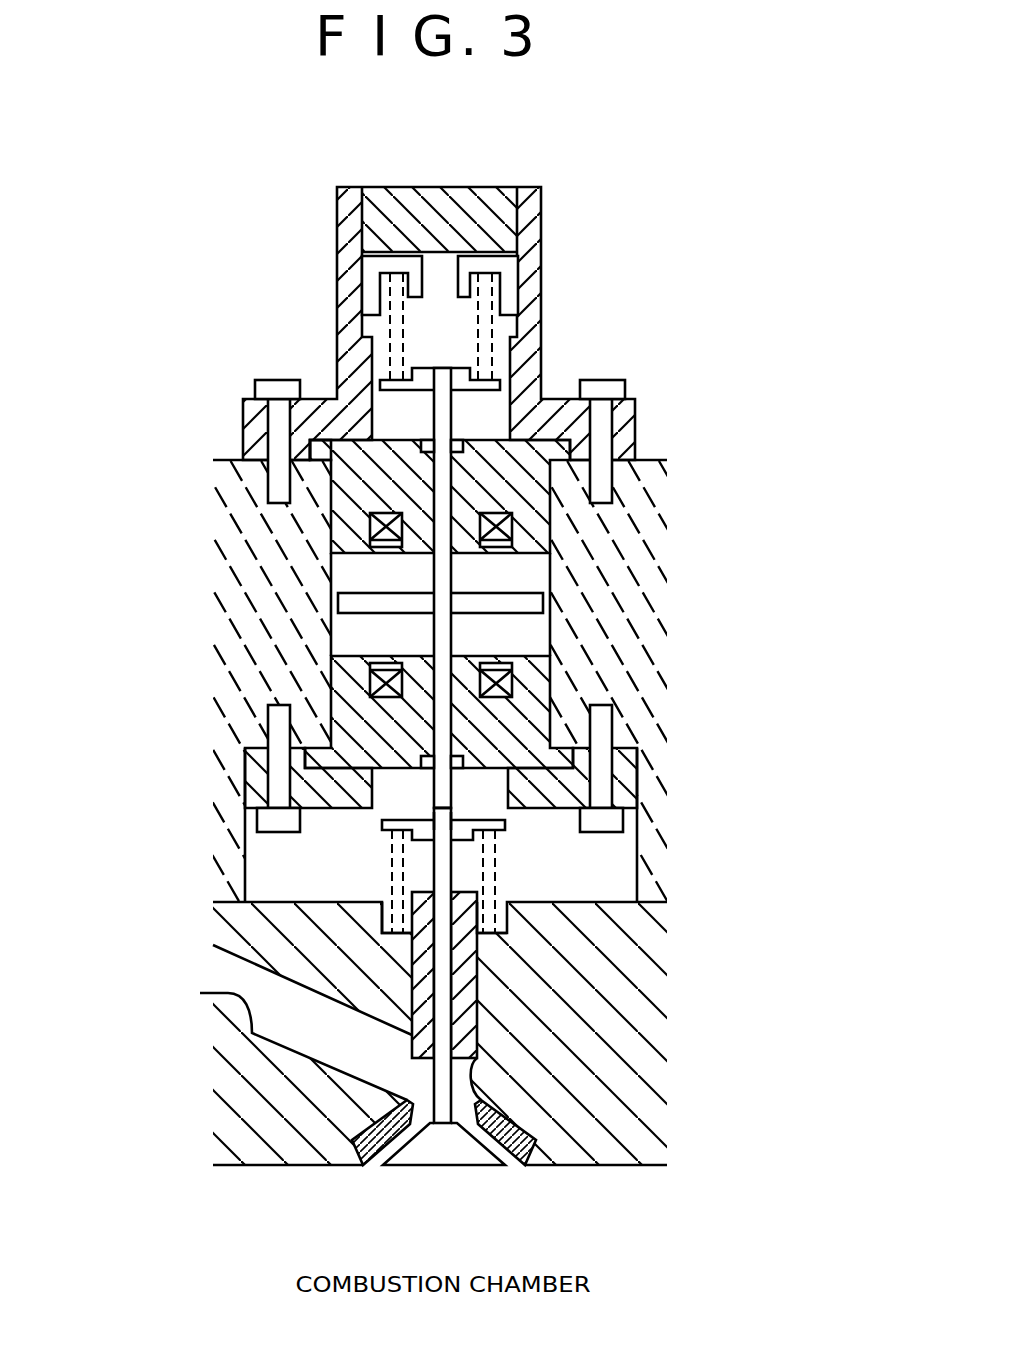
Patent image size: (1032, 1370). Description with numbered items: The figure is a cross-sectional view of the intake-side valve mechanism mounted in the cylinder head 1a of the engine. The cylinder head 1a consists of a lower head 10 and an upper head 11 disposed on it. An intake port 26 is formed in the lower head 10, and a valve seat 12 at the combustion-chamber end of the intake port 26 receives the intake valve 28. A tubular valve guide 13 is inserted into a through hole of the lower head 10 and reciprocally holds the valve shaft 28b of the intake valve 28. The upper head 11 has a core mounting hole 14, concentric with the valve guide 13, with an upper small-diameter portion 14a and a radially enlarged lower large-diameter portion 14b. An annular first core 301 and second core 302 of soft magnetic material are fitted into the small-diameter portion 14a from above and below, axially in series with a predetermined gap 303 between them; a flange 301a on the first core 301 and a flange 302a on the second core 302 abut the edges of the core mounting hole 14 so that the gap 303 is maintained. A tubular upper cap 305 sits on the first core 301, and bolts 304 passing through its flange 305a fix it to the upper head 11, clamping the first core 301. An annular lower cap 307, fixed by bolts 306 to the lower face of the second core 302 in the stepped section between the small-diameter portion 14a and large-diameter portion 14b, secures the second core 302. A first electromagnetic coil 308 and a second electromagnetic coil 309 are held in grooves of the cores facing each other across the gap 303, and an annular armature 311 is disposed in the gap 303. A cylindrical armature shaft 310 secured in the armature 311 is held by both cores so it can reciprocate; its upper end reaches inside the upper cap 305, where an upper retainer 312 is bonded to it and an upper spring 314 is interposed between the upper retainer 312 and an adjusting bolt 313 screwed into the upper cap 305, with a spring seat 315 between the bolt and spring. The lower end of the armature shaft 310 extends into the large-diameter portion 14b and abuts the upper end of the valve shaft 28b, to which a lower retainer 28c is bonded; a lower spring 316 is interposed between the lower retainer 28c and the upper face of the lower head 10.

The cylinder head 1a is at (456, 812).
The lower head 10 is at (645, 975).
The upper head 11 is at (658, 905).
The valve seat 12 is at (378, 1152).
The valve guide 13 is at (480, 1020).
The core mounting hole 14 is at (452, 584).
The small-diameter portion 14a is at (449, 500).
The large-diameter portion 14b is at (492, 744).
The intake port 26 is at (262, 1035).
The intake valve 28 is at (594, 1025).
The valve shaft 28b is at (445, 1088).
The lower retainer 28c is at (508, 830).
The first core 301 is at (500, 437).
The flange 301a is at (318, 441).
The second core 302 is at (540, 705).
The flange 302a is at (633, 748).
The gap 303 is at (527, 571).
The bolts 304 is at (258, 391).
The upper cap 305 is at (482, 279).
The flange 305a is at (636, 412).
The bolts 306 is at (610, 818).
The lower cap 307 is at (556, 772).
The first electromagnetic coil 308 is at (370, 528).
The second electromagnetic coil 309 is at (548, 651).
The armature shaft 310 is at (445, 580).
The armature 311 is at (543, 604).
The upper retainer 312 is at (497, 382).
The adjusting bolt 313 is at (439, 188).
The upper spring 314 is at (388, 330).
The spring seat 315 is at (377, 263).
The lower spring 316 is at (388, 877).